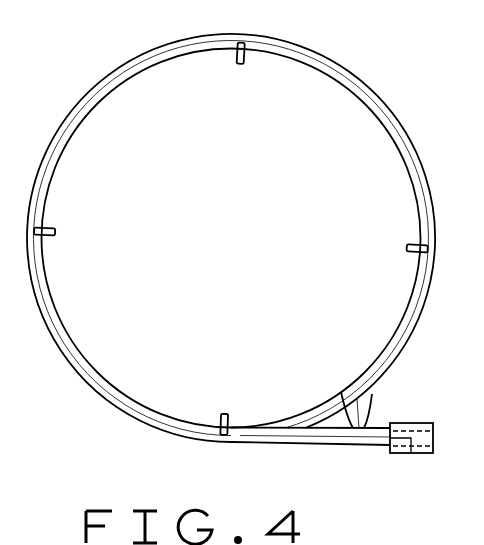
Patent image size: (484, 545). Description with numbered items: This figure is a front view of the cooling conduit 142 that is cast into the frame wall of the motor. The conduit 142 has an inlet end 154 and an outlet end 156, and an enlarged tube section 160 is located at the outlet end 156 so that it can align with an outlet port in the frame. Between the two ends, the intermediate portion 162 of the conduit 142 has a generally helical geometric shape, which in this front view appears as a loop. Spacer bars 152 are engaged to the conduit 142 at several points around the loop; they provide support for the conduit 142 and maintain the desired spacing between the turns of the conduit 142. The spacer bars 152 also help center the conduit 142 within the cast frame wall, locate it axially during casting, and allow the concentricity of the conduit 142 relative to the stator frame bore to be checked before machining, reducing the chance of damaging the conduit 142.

The cooling conduit 142 is at (366, 60).
The spacer bars 152 is at (245, 63).
The inlet end 154 is at (366, 405).
The outlet end 156 is at (344, 438).
The enlarged tube section 160 is at (414, 450).
The intermediate portion 162 is at (160, 58).